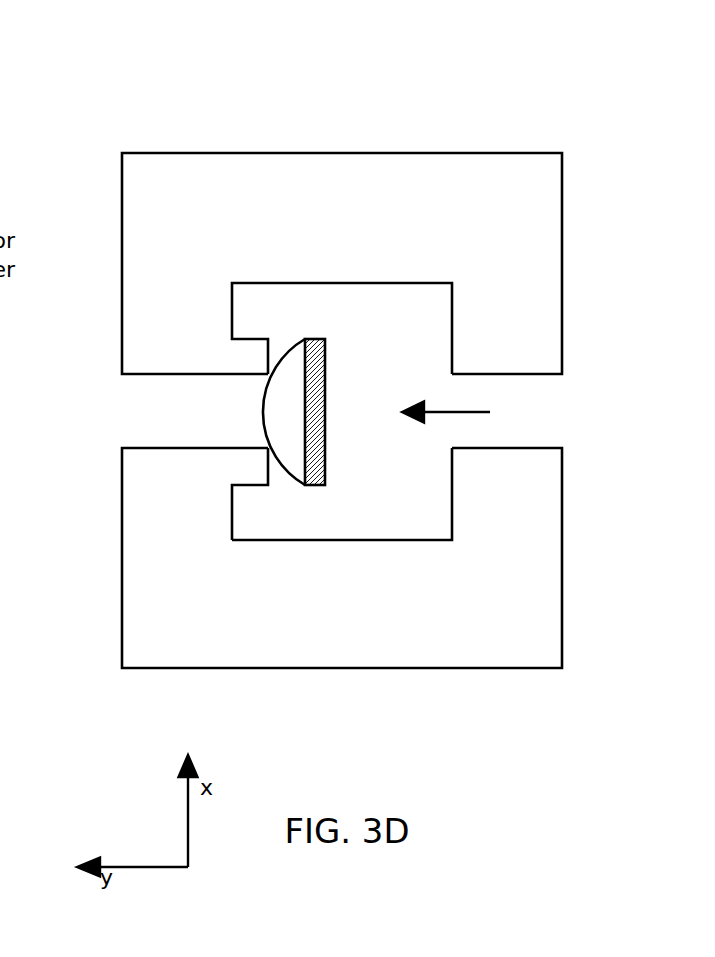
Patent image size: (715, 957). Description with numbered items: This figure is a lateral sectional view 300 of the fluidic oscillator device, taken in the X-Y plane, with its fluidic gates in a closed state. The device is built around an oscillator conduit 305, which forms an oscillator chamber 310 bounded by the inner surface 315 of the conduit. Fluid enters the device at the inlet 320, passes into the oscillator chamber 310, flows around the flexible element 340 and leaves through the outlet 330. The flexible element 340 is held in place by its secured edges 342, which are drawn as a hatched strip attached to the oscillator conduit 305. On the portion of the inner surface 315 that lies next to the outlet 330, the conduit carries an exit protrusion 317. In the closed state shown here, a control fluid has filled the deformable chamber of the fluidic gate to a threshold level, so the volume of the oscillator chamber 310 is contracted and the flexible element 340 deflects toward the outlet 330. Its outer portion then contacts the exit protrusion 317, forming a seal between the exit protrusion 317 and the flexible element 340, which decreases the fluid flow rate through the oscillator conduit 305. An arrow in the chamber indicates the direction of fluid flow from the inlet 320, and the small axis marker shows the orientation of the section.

The lateral sectional view 300 is at (46, 46).
The oscillator conduit 305 is at (543, 231).
The oscillator chamber 310 is at (433, 342).
The inner surface 315 is at (417, 540).
The exit protrusion 317 is at (268, 462).
The inlet 320 is at (562, 420).
The outlet 330 is at (137, 415).
The flexible element 340 is at (290, 480).
The secured edges 342 is at (324, 339).